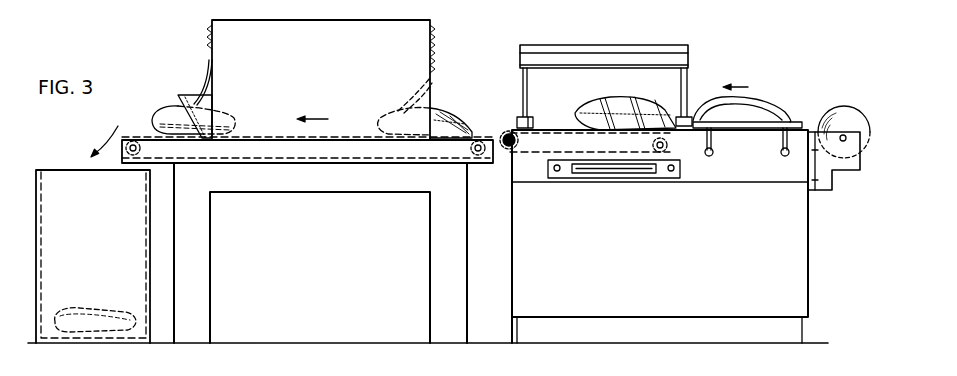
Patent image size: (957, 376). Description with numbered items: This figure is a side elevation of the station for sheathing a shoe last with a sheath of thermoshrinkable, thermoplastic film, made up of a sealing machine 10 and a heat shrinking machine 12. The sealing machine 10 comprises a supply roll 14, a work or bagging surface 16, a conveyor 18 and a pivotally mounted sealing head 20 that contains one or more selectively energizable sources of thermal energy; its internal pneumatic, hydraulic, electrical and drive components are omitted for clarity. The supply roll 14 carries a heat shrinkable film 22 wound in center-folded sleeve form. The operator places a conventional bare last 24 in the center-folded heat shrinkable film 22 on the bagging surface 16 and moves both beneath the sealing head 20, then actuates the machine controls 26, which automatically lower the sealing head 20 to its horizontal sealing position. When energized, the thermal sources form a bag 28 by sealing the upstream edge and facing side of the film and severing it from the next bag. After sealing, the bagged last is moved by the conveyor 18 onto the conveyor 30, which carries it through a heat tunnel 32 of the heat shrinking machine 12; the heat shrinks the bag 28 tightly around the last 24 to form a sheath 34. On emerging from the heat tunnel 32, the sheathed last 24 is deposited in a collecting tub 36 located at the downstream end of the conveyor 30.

The sealing machine 10 is at (760, 40).
The heat shrinking machine 12 is at (203, 65).
The supply roll 14 is at (856, 120).
The work or bagging surface 16 is at (800, 122).
The conveyor 18 is at (525, 135).
The pivotally mounted sealing head 20 is at (545, 50).
The heat shrinkable film 22 is at (697, 113).
The last 24 is at (170, 122).
The machine controls 26 is at (584, 172).
The bag 28 is at (587, 105).
The conveyor 30 is at (385, 162).
The heat tunnel 32 is at (243, 31).
The sheath 34 is at (173, 107).
The collecting tub 36 is at (74, 188).